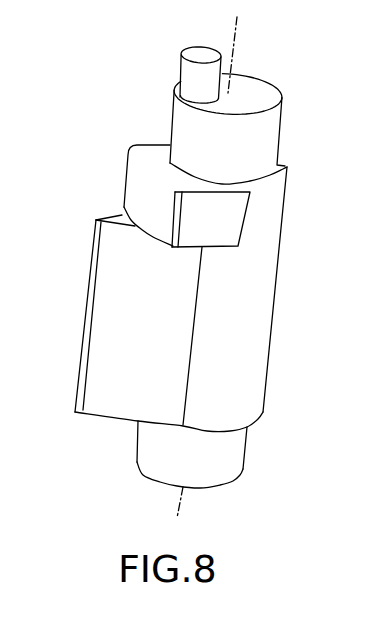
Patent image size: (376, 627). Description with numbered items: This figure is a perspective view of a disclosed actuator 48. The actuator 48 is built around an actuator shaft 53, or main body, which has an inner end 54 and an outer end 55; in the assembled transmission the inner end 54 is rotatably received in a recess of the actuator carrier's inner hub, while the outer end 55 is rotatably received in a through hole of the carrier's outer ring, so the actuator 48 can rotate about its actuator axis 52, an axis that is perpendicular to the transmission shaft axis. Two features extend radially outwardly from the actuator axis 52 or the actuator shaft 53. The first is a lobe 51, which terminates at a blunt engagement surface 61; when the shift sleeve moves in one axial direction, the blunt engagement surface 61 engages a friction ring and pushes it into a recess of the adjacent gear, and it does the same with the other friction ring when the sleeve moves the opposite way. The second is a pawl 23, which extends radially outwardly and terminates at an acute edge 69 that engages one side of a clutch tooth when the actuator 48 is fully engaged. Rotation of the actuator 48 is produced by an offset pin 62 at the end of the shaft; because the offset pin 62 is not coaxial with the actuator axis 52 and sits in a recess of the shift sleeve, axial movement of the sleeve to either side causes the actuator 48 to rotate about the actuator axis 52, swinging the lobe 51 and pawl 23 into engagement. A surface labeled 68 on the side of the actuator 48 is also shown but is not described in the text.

The actuator 48 is at (292, 73).
The actuator axis 52 is at (240, 43).
The actuator shaft 53 is at (283, 117).
The outer end 55 is at (279, 145).
The offset pin 62 is at (181, 62).
The blunt engagement surface 61 is at (124, 183).
The lobe 51 is at (141, 144).
The acute edge 69 is at (85, 318).
The pawl 23 is at (104, 417).
The side surface 68 is at (318, 293).
The inner end 54 is at (246, 448).